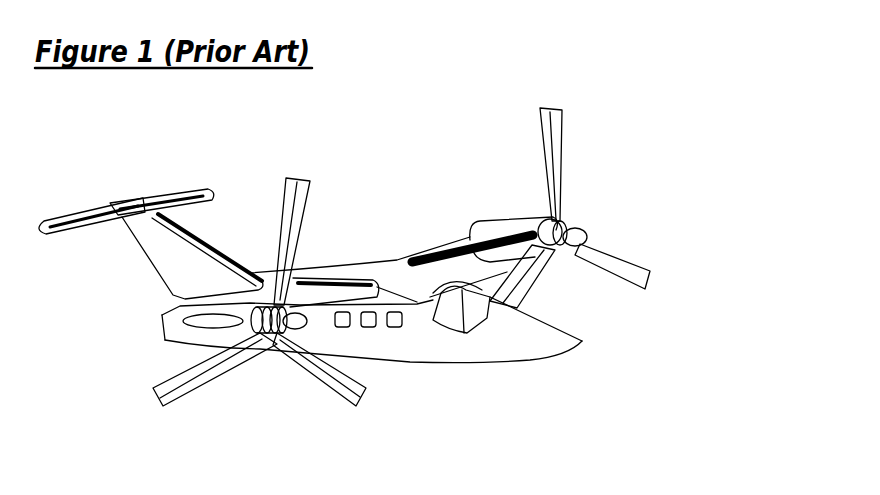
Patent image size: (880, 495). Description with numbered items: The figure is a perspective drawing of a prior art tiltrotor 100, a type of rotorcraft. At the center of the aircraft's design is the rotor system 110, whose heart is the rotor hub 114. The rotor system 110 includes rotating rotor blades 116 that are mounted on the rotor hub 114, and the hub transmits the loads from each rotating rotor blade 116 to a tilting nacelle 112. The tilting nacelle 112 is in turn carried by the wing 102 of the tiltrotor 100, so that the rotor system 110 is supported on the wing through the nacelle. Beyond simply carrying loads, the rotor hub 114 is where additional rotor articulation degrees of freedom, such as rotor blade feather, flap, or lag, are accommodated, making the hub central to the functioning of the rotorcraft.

The tiltrotor 100 is at (391, 142).
The wing 102 is at (429, 245).
The rotor system 110 is at (380, 413).
The tilting nacelle 112 is at (177, 310).
The rotor hub 114 is at (307, 272).
The rotor blade 116 is at (173, 375).